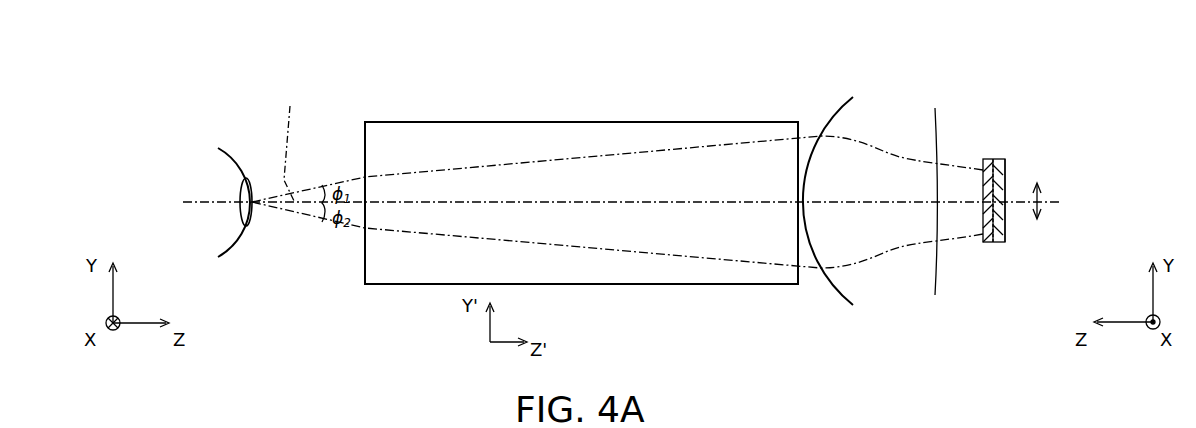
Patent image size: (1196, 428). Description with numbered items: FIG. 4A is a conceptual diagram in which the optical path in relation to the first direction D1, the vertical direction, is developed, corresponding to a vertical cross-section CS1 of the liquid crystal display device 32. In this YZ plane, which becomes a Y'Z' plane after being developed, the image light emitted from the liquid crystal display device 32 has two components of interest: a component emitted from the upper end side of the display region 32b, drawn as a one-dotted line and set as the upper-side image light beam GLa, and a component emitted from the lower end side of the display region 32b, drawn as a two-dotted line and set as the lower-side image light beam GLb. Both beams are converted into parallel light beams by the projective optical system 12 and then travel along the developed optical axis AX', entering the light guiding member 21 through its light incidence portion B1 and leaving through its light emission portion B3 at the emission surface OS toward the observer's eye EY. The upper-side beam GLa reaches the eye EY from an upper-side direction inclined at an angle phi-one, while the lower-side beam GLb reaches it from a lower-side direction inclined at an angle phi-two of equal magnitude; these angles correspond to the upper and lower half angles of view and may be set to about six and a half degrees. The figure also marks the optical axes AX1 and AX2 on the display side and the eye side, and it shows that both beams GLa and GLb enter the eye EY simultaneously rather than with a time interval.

The projective optical system 12 is at (886, 93).
The light guiding member 21 is at (662, 122).
The liquid crystal display device 32 is at (1005, 160).
The display region 32b is at (1000, 244).
The light incidence portion B1 is at (772, 122).
The light emission portion B3 is at (385, 122).
The observer's eye EY is at (234, 150).
The second optical axis AX2 is at (286, 144).
The first optical axis AX1 is at (1022, 208).
The developed optical axis AX' is at (601, 210).
The upper-side image light beam GLa is at (324, 185).
The lower-side image light beam GLb is at (324, 220).
The exit surface OS is at (364, 288).
The vertical cross-section CS1 is at (999, 158).
The first direction D1 is at (1037, 180).